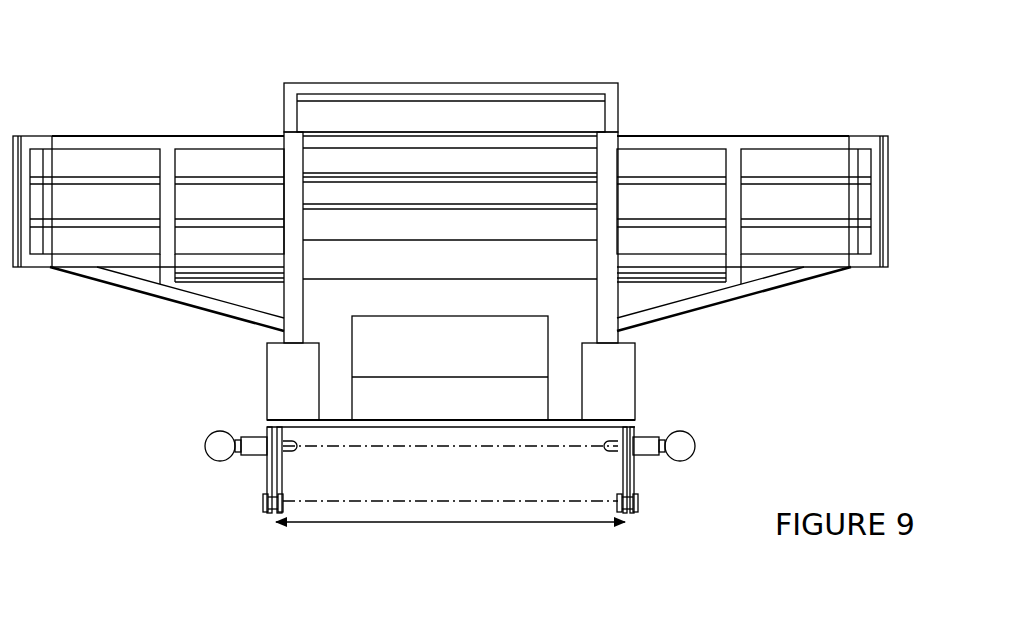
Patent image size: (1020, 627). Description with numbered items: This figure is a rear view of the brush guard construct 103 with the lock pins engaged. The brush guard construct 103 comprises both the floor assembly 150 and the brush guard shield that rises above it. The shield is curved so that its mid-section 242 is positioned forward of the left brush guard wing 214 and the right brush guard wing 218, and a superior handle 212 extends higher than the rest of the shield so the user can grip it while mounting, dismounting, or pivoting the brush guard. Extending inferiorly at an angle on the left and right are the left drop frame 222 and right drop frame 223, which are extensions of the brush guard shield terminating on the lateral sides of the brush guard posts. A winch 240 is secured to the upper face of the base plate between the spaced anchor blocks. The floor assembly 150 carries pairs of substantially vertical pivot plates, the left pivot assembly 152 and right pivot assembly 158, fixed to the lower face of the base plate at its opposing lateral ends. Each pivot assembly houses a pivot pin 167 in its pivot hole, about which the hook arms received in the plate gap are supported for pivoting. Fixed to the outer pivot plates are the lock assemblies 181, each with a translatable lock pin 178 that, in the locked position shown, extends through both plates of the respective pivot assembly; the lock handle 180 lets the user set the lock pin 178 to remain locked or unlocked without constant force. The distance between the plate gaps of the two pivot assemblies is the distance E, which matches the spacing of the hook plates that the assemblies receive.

The brush guard construct 103 is at (677, 80).
The superior handle 212 is at (329, 80).
The mid-section 242 is at (432, 128).
The left brush guard wing 214 is at (127, 133).
The right brush guard wing 218 is at (751, 130).
The right drop frame 223 is at (195, 308).
The left drop frame 222 is at (714, 308).
The winch 240 is at (430, 313).
The floor assembly 150 is at (156, 461).
The left pivot assembly 152 is at (262, 481).
The right pivot assembly 158 is at (640, 474).
The pivot pin 167 is at (263, 506).
The lock pin 178 is at (300, 448).
The lock assembly 181 is at (246, 431).
The lock handle 180 is at (692, 436).